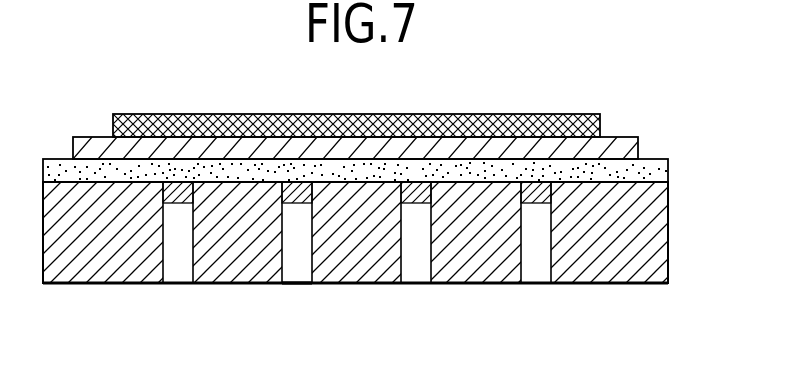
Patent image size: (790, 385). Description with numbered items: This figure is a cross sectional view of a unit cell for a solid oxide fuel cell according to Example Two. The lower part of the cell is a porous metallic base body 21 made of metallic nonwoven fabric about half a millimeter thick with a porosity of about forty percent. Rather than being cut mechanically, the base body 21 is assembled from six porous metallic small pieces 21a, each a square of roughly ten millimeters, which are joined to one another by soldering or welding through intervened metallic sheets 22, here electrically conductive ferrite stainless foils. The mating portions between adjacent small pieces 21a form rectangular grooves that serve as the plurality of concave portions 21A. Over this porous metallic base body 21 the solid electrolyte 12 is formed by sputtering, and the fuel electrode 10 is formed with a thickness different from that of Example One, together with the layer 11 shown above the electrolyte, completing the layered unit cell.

The fuel electrode 10 is at (668, 170).
The upper electrode layer 11 is at (487, 115).
The solid electrolyte 12 is at (638, 142).
The porous metallic base body 21 is at (668, 228).
The porous metallic small pieces 21a is at (95, 279).
The concave portions 21A is at (300, 273).
The metallic sheets 22 is at (183, 205).